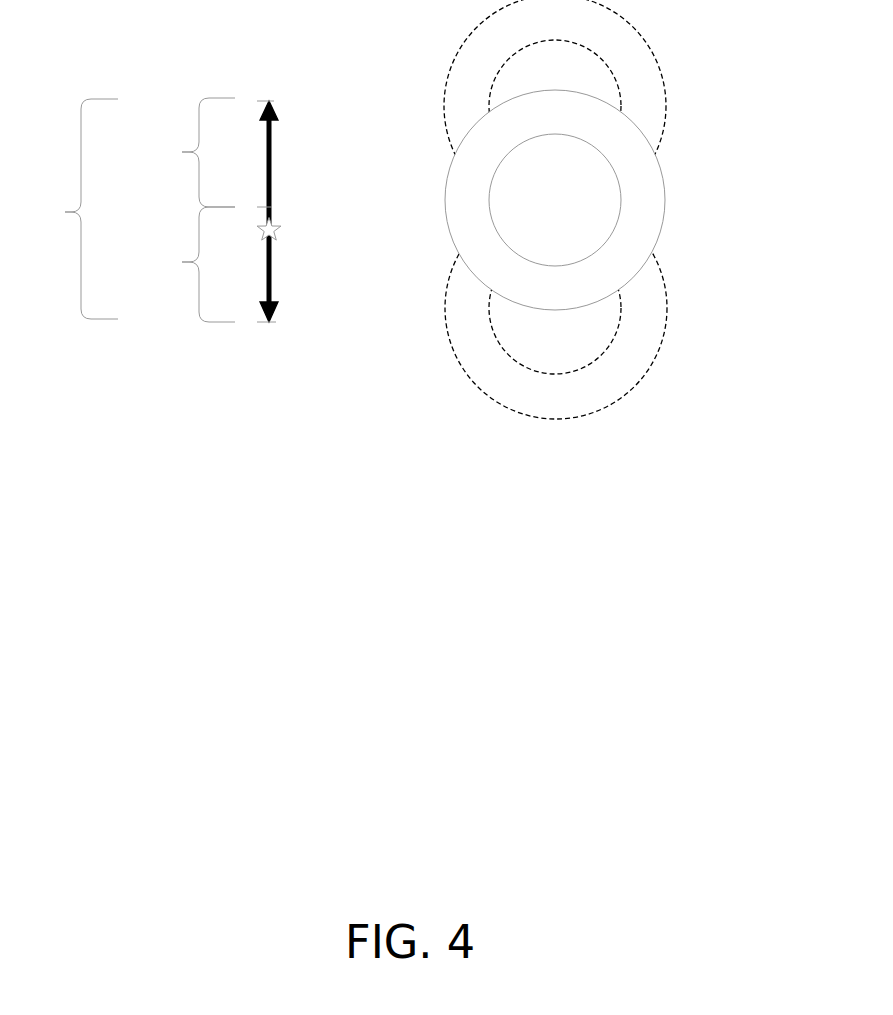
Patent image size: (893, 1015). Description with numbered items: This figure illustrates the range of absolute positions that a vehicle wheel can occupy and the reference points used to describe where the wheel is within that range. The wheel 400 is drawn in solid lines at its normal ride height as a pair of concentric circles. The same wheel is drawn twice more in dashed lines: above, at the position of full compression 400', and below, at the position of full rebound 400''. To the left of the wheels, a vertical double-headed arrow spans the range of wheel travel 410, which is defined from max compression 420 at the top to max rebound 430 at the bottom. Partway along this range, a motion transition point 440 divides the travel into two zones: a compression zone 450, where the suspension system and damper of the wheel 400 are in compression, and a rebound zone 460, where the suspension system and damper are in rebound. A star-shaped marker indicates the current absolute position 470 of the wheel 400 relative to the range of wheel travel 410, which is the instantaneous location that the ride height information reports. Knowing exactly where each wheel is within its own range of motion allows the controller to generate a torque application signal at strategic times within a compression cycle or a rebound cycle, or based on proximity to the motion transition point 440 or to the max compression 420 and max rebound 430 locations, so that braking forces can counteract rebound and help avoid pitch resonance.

The wheel 400 is at (604, 200).
The wheel at position of full compression 400' is at (600, 108).
The wheel at position of full rebound 400'' is at (610, 308).
The range of wheel travel 410 is at (145, 209).
The max compression 420 is at (276, 103).
The max rebound 430 is at (274, 323).
The motion transition point 440 is at (272, 208).
The compression zone 450 is at (186, 152).
The rebound zone 460 is at (182, 264).
The current absolute position 470 is at (278, 238).